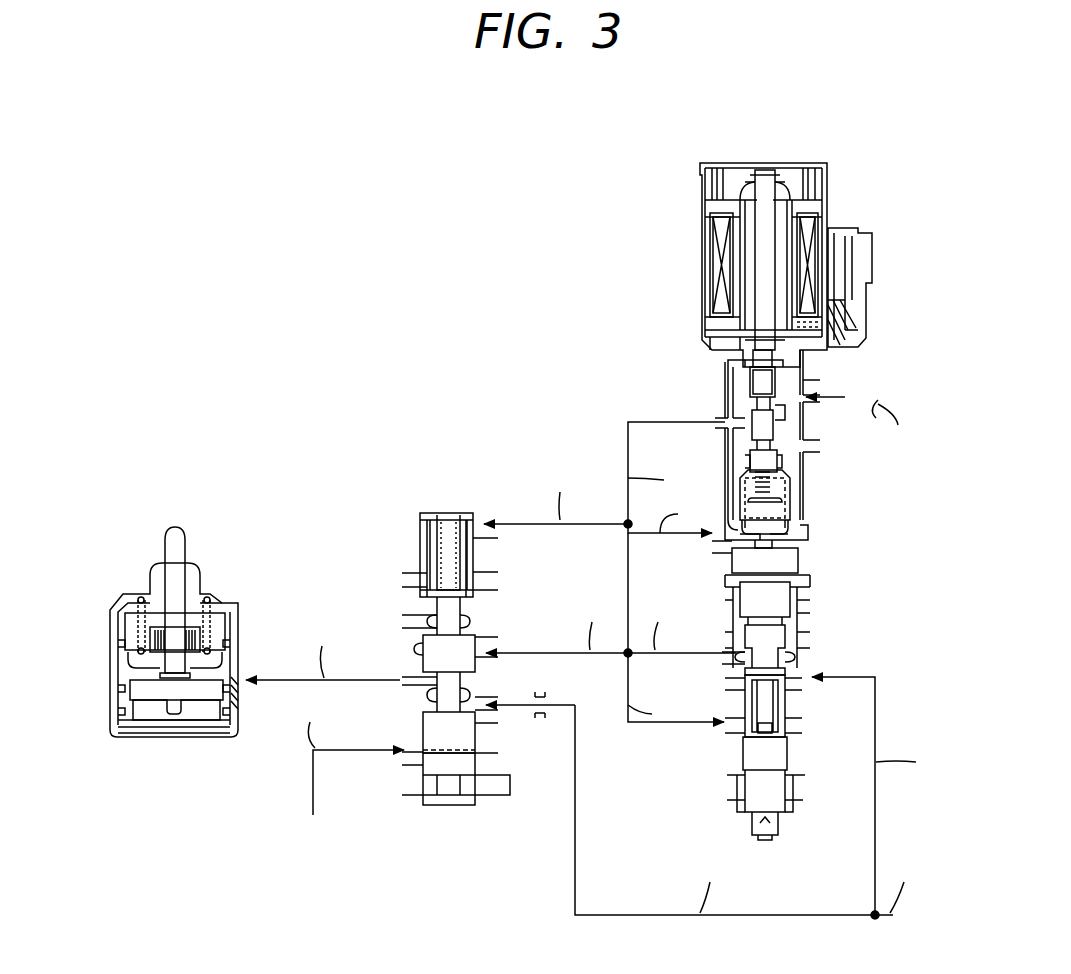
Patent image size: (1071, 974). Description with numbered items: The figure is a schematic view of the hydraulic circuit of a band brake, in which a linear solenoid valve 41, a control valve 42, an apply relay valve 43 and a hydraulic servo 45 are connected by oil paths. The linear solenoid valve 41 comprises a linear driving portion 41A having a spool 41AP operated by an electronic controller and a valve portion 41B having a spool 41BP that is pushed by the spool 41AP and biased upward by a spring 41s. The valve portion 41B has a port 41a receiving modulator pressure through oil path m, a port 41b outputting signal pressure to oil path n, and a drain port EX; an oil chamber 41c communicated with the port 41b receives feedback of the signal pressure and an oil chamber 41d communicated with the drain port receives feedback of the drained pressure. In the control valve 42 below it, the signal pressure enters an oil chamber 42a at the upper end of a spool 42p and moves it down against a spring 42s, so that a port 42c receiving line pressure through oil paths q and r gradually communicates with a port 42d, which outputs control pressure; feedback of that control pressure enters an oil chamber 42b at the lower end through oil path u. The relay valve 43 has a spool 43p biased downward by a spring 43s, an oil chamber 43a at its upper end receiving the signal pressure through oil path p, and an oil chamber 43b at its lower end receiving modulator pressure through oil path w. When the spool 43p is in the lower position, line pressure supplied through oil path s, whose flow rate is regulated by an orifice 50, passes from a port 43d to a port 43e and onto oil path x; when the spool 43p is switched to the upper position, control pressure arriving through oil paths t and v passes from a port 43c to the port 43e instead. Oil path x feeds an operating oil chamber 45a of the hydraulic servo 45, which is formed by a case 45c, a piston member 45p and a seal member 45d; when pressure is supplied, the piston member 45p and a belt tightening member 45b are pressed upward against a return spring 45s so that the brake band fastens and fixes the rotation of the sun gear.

The linear solenoid valve for B-1 41 is at (820, 148).
The linear driving portion 41A is at (874, 264).
The spool of linear driving portion 41AP is at (760, 235).
The valve portion 41B is at (832, 472).
The spool of valve portion 41BP is at (755, 385).
The port 41a is at (810, 384).
The port 41b is at (732, 424).
The oil chamber 41c is at (748, 368).
The oil chamber 41d is at (808, 530).
The spring 41s is at (795, 501).
The control valve 42 is at (782, 848).
The oil chamber 42a is at (736, 548).
The oil chamber 42b is at (762, 712).
The port 42c is at (802, 682).
The port 42d is at (736, 660).
The spool 42p is at (780, 602).
The spring 42s is at (792, 722).
The B-1 apply relay valve 43 is at (437, 486).
The oil chamber 43a is at (456, 530).
The oil chamber 43b is at (416, 756).
The port 43c is at (486, 648).
The port 43d is at (484, 706).
The port 43e is at (412, 672).
The spool 43p is at (432, 724).
The spring 43s is at (418, 528).
The B-1 hydraulic servo 45 is at (196, 528).
The operating oil chamber 45a is at (130, 674).
The belt tightening member 45b is at (172, 561).
The case 45c is at (116, 702).
The seal member 45d is at (150, 724).
The piston member 45p is at (216, 645).
The return spring 45s is at (200, 623).
The orifice 50 is at (546, 700).